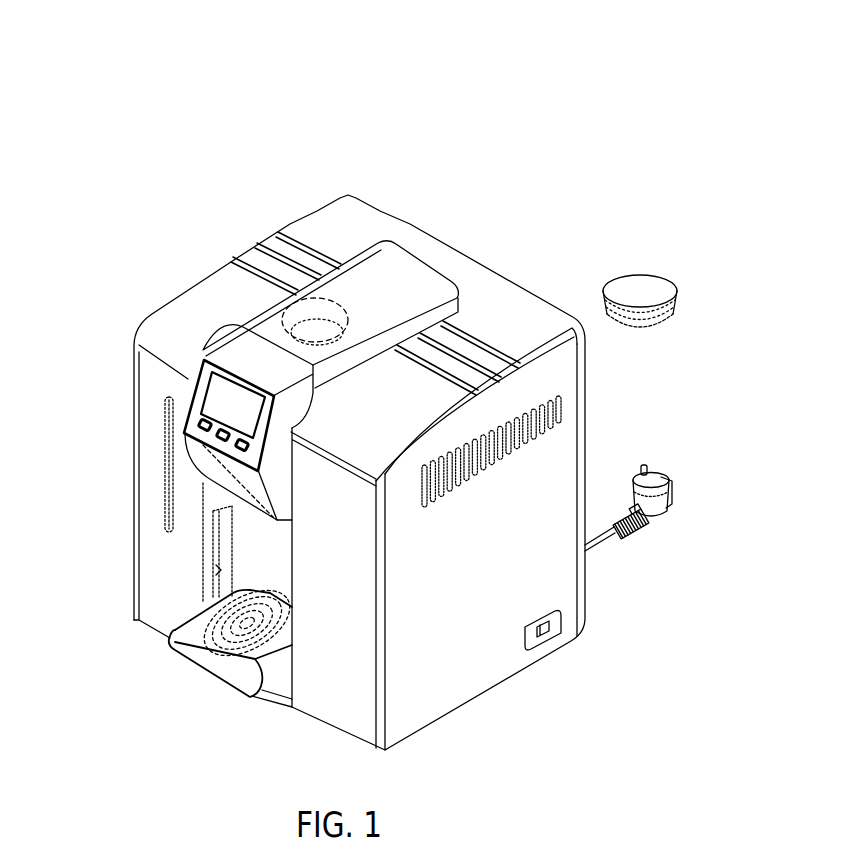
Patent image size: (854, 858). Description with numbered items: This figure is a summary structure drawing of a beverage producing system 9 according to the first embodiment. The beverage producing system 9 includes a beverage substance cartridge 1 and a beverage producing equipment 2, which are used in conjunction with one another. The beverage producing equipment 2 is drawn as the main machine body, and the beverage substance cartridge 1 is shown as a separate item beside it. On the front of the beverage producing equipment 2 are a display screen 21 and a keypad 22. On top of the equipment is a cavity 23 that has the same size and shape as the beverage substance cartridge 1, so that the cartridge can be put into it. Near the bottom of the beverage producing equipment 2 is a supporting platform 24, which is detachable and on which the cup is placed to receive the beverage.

The beverage substance cartridge 1 is at (690, 233).
The beverage producing equipment 2 is at (545, 216).
The beverage producing system 9 is at (129, 77).
The display screen 21 is at (224, 394).
The keypad 22 is at (200, 428).
The cavity 23 is at (300, 313).
The supporting platform 24 is at (220, 657).